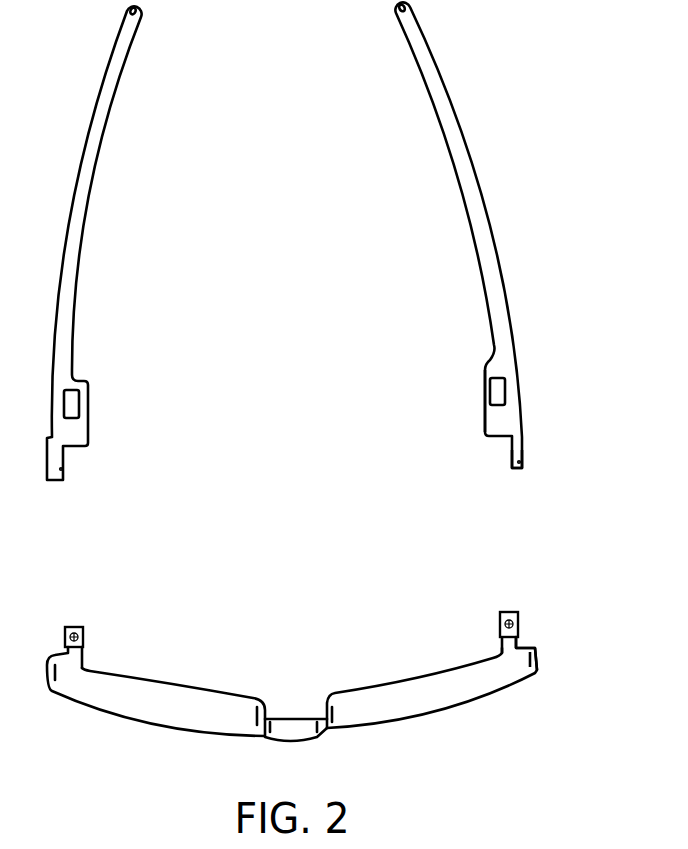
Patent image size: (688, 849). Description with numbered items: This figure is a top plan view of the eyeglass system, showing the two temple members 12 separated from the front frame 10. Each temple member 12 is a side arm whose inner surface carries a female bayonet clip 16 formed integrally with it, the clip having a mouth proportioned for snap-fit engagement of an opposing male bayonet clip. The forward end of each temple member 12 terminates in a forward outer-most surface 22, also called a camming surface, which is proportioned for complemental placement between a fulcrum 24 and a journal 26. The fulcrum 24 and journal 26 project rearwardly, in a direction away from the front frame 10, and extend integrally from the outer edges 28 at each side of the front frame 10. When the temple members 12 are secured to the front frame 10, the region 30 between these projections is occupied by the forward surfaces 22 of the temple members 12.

The front frame 10 is at (428, 717).
The temple member 12 is at (500, 265).
The female bayonet clip 16 is at (488, 418).
The forward outer-most surface 22 is at (522, 470).
The fulcrum 24 is at (540, 647).
The journal 26 is at (497, 645).
The outer edge 28 is at (538, 665).
The region 30 is at (78, 625).